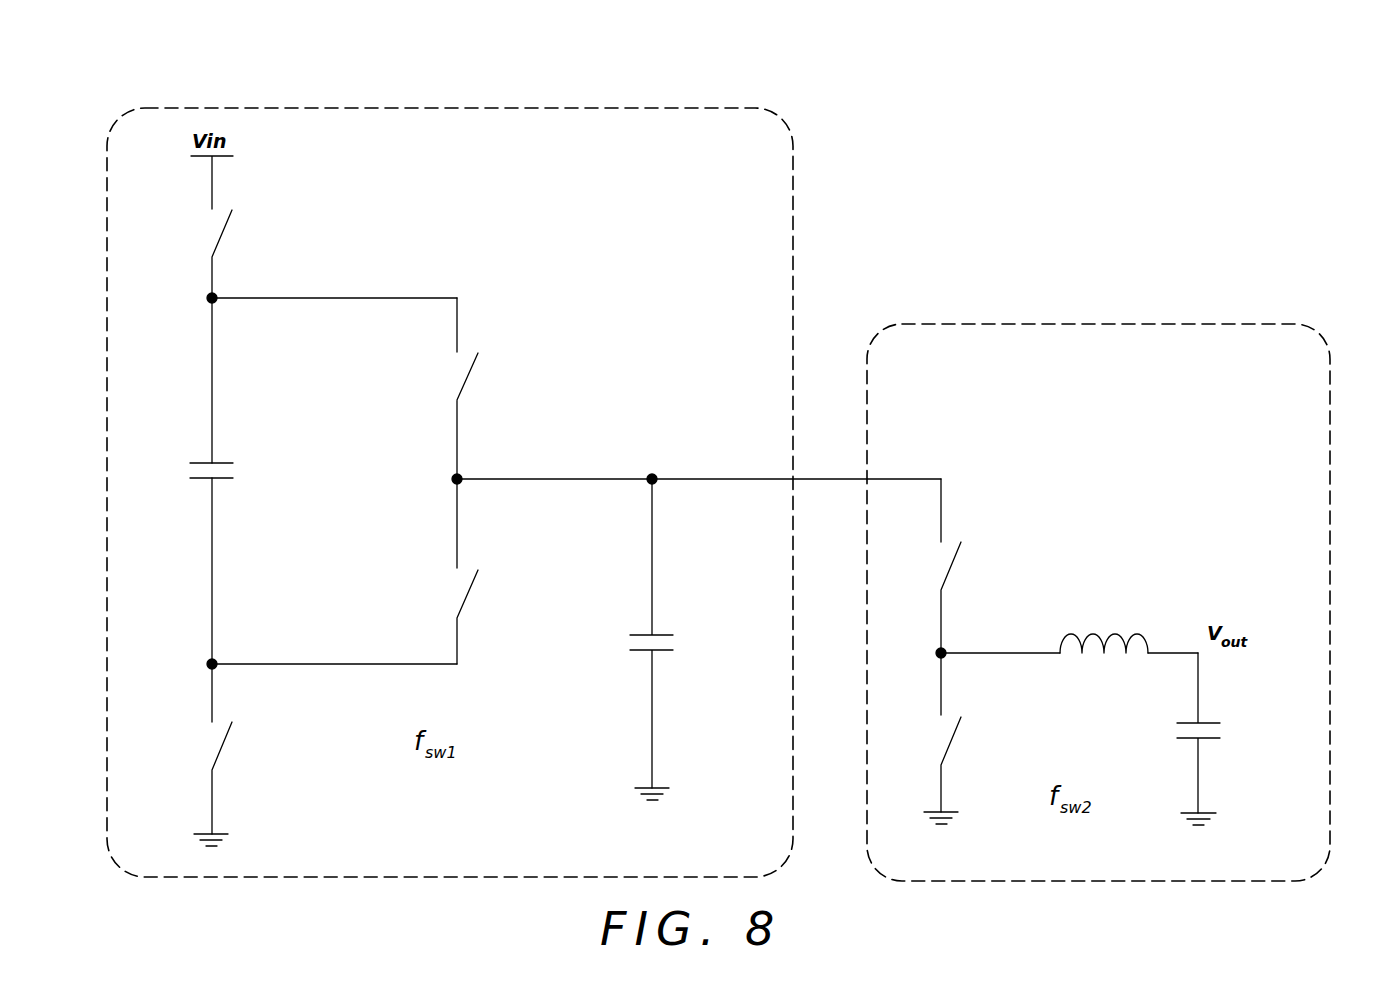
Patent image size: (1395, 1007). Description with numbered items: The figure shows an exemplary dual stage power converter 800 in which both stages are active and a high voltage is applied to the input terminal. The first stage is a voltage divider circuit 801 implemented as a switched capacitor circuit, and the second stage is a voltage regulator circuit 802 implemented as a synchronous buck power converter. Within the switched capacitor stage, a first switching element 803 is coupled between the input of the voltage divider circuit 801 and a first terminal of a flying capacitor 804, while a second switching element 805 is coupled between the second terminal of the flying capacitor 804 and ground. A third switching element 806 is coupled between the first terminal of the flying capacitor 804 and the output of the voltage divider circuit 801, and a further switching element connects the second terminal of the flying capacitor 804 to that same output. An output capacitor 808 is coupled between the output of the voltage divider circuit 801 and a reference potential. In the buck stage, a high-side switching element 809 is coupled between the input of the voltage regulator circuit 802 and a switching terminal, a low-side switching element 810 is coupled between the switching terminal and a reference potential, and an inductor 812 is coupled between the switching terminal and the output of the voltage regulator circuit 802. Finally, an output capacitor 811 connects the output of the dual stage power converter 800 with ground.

The dual stage power converter 800 is at (236, 66).
The voltage divider circuit 801 is at (585, 108).
The voltage regulator circuit 802 is at (479, 592).
The first switching element 803 is at (233, 232).
The flying capacitor 804 is at (224, 456).
The second switching element 805 is at (233, 745).
The third switching element 806 is at (479, 375).
The output capacitor 808 is at (664, 628).
The high-side switching element 809 is at (962, 567).
The low-side switching element 810 is at (962, 742).
The output capacitor 811 is at (1209, 717).
The inductor 812 is at (1119, 622).